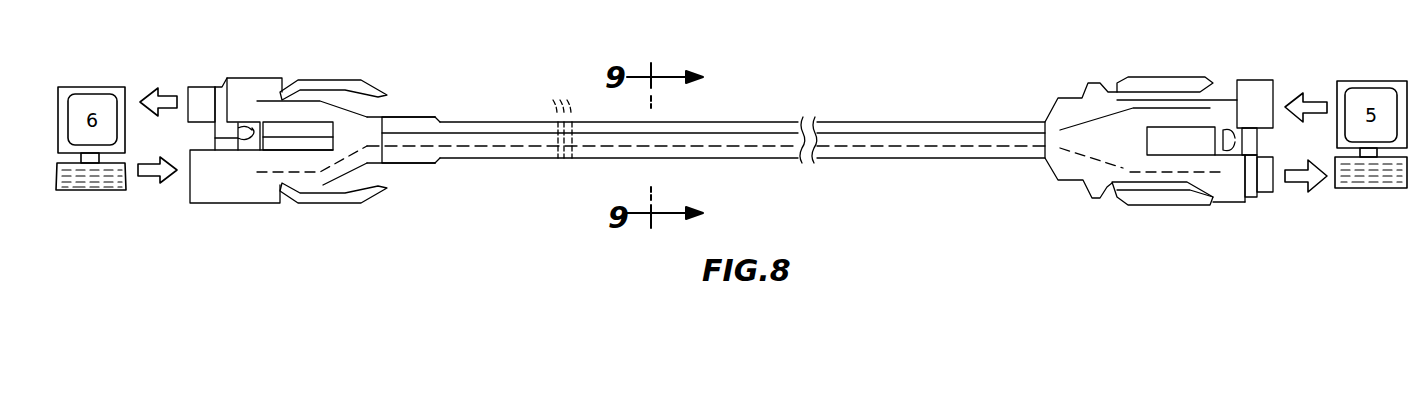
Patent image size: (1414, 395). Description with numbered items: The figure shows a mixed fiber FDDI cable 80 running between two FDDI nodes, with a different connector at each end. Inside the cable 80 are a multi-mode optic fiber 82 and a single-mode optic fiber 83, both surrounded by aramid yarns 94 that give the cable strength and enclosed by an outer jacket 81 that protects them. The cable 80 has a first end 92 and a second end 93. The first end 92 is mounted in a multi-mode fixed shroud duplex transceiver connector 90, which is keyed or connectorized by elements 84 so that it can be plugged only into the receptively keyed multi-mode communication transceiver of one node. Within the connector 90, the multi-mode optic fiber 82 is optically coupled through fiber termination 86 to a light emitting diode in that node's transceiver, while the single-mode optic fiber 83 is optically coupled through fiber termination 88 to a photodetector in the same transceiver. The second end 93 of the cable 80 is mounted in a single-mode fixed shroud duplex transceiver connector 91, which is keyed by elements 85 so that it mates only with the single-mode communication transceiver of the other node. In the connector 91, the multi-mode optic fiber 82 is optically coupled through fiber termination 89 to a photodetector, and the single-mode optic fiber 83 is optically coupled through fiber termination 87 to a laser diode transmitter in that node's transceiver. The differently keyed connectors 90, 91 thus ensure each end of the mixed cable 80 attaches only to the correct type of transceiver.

The mixed fiber cable 80 is at (496, 116).
The outer jacket 81 is at (525, 160).
The multi-mode optic fiber 82 is at (928, 133).
The single-mode optic fiber 83 is at (712, 147).
The keying elements 84 is at (1230, 130).
The keying elements 85 is at (257, 140).
The fiber termination 86 is at (1248, 85).
The fiber termination 87 is at (206, 195).
The fiber termination 88 is at (1237, 193).
The fiber termination 89 is at (247, 83).
The multi-mode fixed shroud duplex transceiver connector 90 is at (1179, 216).
The single-mode fixed shroud duplex transceiver connector 91 is at (222, 216).
The first end 92 is at (1047, 165).
The second end 93 is at (436, 161).
The aramid yarns 94 is at (555, 118).